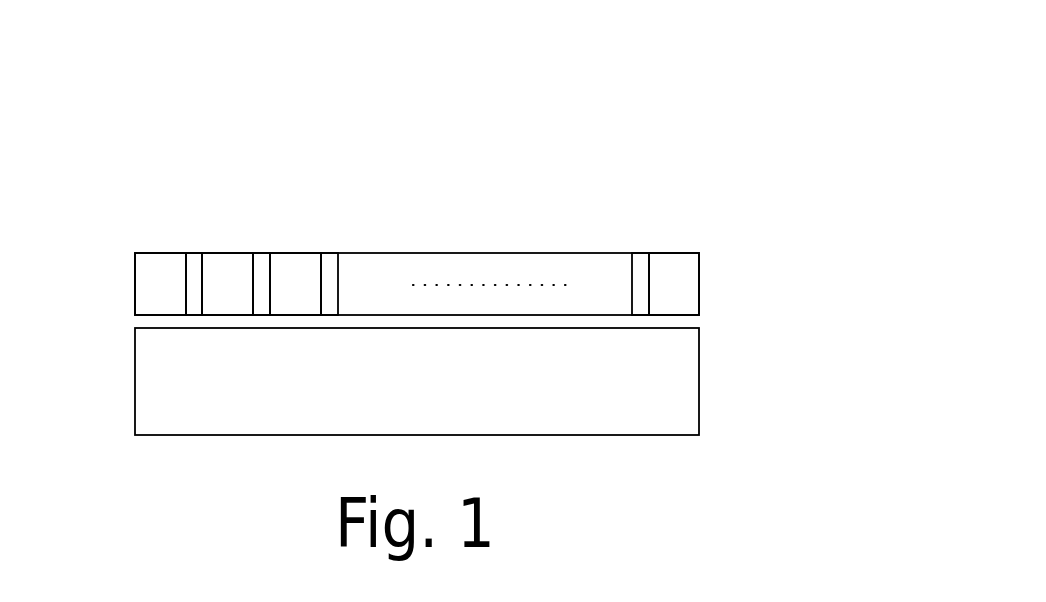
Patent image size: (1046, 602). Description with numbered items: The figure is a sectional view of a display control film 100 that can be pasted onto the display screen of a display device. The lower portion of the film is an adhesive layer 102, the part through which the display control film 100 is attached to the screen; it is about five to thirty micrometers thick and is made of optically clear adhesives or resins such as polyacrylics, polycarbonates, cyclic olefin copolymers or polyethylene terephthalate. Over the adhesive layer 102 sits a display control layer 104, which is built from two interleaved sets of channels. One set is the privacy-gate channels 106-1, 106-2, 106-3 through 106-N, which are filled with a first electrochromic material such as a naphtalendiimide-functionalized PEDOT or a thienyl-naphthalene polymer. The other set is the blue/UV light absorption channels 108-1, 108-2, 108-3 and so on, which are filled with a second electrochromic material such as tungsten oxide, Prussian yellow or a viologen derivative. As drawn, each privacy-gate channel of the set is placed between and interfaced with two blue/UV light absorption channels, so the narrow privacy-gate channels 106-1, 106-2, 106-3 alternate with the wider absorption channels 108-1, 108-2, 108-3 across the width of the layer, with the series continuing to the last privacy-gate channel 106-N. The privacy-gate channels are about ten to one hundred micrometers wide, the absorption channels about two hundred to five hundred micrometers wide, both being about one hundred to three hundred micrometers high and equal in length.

The display control film 100 is at (470, 100).
The adhesive layer 102 is at (417, 381).
The display control layer 104 is at (496, 206).
The privacy-gate channel 106-1 is at (187, 253).
The privacy-gate channel 106-2 is at (263, 253).
The privacy-gate channel 106-3 is at (330, 253).
The privacy-gate channel 106-N is at (642, 253).
The blue/UV light absorption channel 108-1 is at (157, 253).
The blue/UV light absorption channel 108-2 is at (227, 253).
The blue/UV light absorption channel 108-3 is at (298, 253).